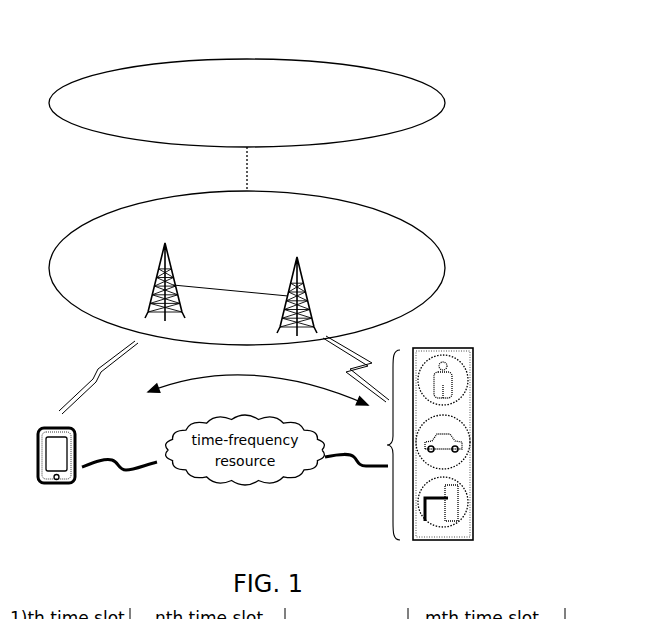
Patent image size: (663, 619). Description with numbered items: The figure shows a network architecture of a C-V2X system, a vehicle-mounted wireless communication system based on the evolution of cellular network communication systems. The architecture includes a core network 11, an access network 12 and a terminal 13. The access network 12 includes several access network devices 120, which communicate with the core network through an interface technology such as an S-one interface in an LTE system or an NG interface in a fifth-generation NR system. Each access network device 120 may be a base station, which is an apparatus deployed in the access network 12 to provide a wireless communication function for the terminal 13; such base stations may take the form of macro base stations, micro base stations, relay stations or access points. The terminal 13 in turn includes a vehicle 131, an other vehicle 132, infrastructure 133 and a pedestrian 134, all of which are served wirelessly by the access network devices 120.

The core network 11 is at (352, 66).
The access network 12 is at (352, 196).
The access network device 120 is at (172, 269).
The terminal 13 is at (258, 385).
The vehicle 131 is at (77, 438).
The other vehicle 132 is at (470, 440).
The infrastructure 133 is at (470, 500).
The pedestrian 134 is at (469, 378).